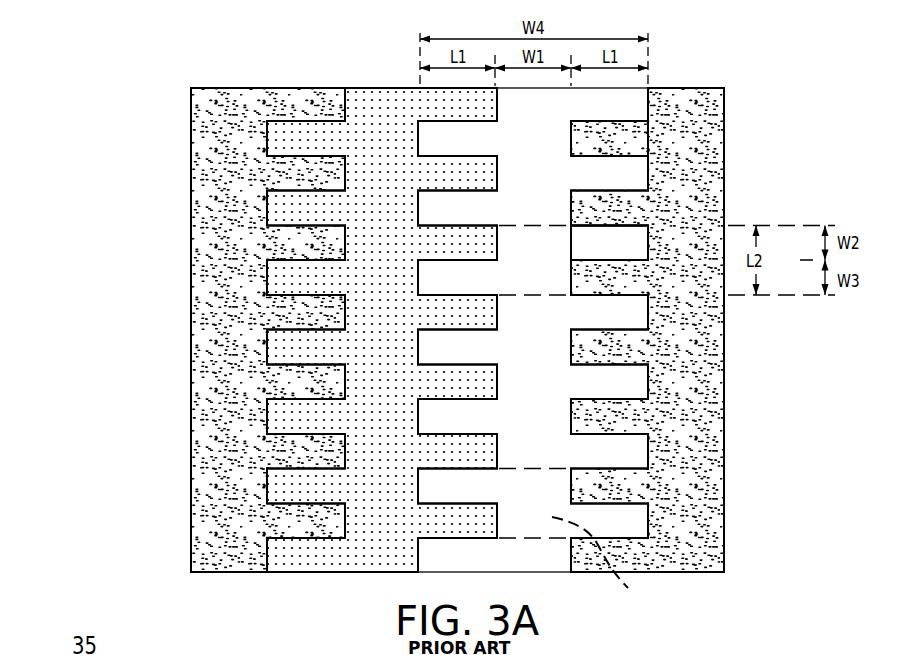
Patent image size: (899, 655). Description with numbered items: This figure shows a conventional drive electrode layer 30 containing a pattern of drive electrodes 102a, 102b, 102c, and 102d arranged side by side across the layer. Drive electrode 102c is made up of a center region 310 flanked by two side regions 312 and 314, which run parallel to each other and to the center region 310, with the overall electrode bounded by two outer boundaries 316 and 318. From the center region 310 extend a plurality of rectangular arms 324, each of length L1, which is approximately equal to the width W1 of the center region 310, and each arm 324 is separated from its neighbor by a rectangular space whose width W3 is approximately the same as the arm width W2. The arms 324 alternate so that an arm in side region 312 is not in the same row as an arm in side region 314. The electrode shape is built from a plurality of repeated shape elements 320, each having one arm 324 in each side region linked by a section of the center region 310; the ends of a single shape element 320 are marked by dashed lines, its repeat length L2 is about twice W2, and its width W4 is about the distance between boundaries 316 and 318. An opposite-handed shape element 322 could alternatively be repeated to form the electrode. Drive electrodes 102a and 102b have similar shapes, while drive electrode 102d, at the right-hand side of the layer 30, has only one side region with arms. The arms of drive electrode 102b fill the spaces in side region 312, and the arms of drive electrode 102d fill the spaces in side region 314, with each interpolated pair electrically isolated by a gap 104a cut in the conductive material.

The drive electrode layer 30 is at (140, 97).
The drive electrode 102a is at (222, 537).
The drive electrode 102b is at (300, 567).
The drive electrode 102c is at (507, 562).
The drive electrode 102d is at (680, 555).
The gap 104a is at (262, 573).
The center region 310 is at (650, 92).
The side region 312 is at (458, 138).
The side region 314 is at (612, 108).
The outer boundary 316 is at (413, 138).
The outer boundary 318 is at (651, 117).
The repeating shape element 320 is at (552, 275).
The opposite-handed shape element 322 is at (615, 578).
The rectangular arm 324 is at (435, 275).